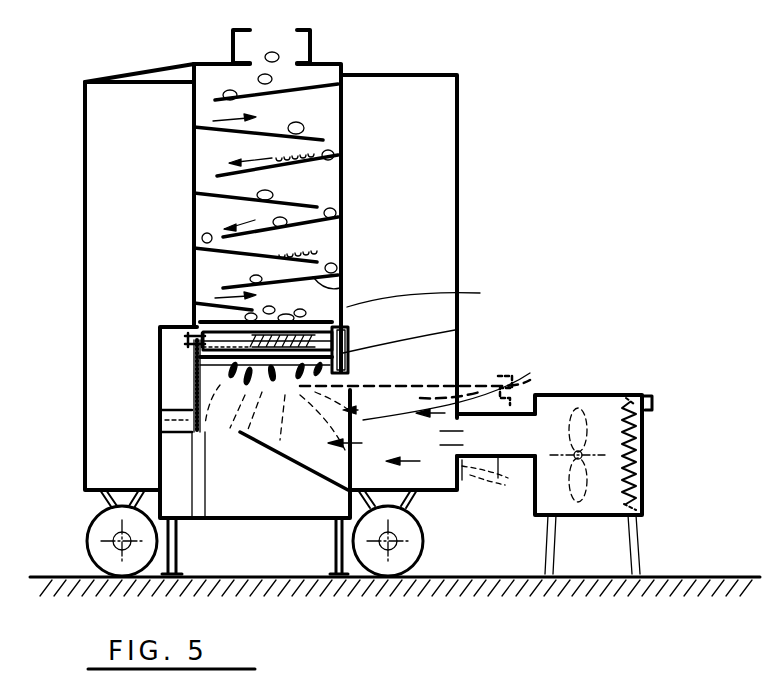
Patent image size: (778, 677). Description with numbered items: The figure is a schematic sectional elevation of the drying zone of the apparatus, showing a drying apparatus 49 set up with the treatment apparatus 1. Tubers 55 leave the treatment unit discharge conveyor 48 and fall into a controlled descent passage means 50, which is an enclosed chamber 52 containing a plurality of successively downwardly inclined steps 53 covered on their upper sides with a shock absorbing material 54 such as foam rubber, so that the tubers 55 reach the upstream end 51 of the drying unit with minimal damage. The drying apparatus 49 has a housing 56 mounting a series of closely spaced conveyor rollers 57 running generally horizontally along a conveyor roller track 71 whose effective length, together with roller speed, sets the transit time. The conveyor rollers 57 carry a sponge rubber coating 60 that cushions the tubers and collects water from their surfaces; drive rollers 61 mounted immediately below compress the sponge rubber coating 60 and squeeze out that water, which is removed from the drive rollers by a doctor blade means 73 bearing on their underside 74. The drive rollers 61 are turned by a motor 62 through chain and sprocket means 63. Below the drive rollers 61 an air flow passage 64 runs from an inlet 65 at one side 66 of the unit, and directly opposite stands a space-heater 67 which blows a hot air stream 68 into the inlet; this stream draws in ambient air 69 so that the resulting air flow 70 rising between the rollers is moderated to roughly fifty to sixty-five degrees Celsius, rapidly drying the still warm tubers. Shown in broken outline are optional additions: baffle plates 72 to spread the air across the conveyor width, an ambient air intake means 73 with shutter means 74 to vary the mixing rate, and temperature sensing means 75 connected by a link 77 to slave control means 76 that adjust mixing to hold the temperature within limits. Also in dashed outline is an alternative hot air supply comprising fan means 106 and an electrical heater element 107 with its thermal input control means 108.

The treatment apparatus 1 is at (458, 217).
The treatment unit discharge conveyor 48 is at (310, 33).
The drying apparatus 49 is at (160, 347).
The controlled descent passage means 50 is at (192, 205).
The upstream end 51 is at (197, 323).
The enclosed chamber 52 is at (327, 230).
The downwardly inclined steps 53 is at (313, 283).
The shock absorbing material 54 is at (300, 192).
The tubers 55 is at (273, 187).
The housing 56 is at (160, 365).
The conveyor rollers 57 is at (193, 347).
The sponge rubber coating 60 is at (305, 322).
The drive rollers 61 is at (345, 343).
The motor 62 is at (162, 428).
The chain and sprocket means 63 is at (193, 373).
The air flow passage 64 is at (280, 372).
The inlet 65 is at (352, 455).
The side of the drying unit 66 is at (355, 405).
The space-heater 67 is at (628, 570).
The hot air stream 68 is at (433, 468).
The ambient air 69 is at (480, 450).
The air flow 70 is at (193, 323).
The conveyor roller track 71 is at (213, 322).
The baffle plates 72 is at (350, 372).
The ambient air intake means 73 is at (276, 370).
The shutter means 74 is at (508, 405).
The temperature sensing means 75 is at (348, 335).
The slave control means 76 is at (507, 377).
The link 77 is at (380, 387).
The fan means 106 is at (580, 468).
The electrical heater element 107 is at (636, 508).
The thermal input control means 108 is at (646, 392).